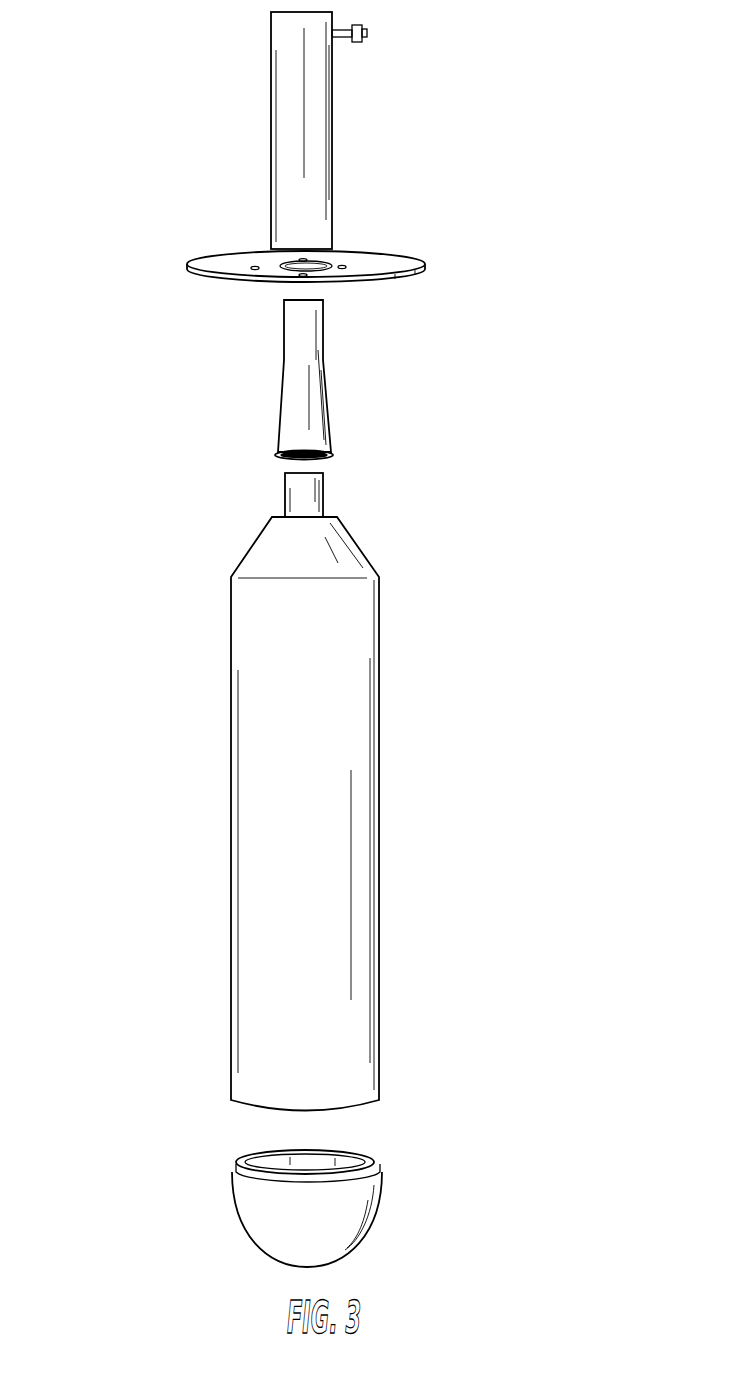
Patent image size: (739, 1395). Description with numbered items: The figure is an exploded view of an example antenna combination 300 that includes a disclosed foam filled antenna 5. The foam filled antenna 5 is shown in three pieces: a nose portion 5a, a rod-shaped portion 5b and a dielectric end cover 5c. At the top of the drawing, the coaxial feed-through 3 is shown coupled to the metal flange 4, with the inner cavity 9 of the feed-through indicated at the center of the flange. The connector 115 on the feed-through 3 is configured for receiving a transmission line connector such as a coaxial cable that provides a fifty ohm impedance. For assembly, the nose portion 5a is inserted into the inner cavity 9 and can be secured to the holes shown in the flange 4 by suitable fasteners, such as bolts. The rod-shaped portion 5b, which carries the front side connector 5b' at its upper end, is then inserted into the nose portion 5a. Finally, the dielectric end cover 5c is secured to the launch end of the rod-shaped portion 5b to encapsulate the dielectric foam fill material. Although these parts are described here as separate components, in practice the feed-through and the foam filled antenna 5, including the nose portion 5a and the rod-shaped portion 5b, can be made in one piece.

The feed-through 3 is at (271, 135).
The connector 115 is at (340, 37).
The metal flange 4 is at (190, 270).
The inner cavity 9 is at (292, 267).
The foam filled antenna 5 is at (131, 412).
The nose portion 5a is at (294, 374).
The front side connector 5b' is at (372, 495).
The rod-shaped portion 5b is at (259, 814).
The dielectric end cover 5c is at (240, 1192).
The antenna combination 300 is at (503, 415).